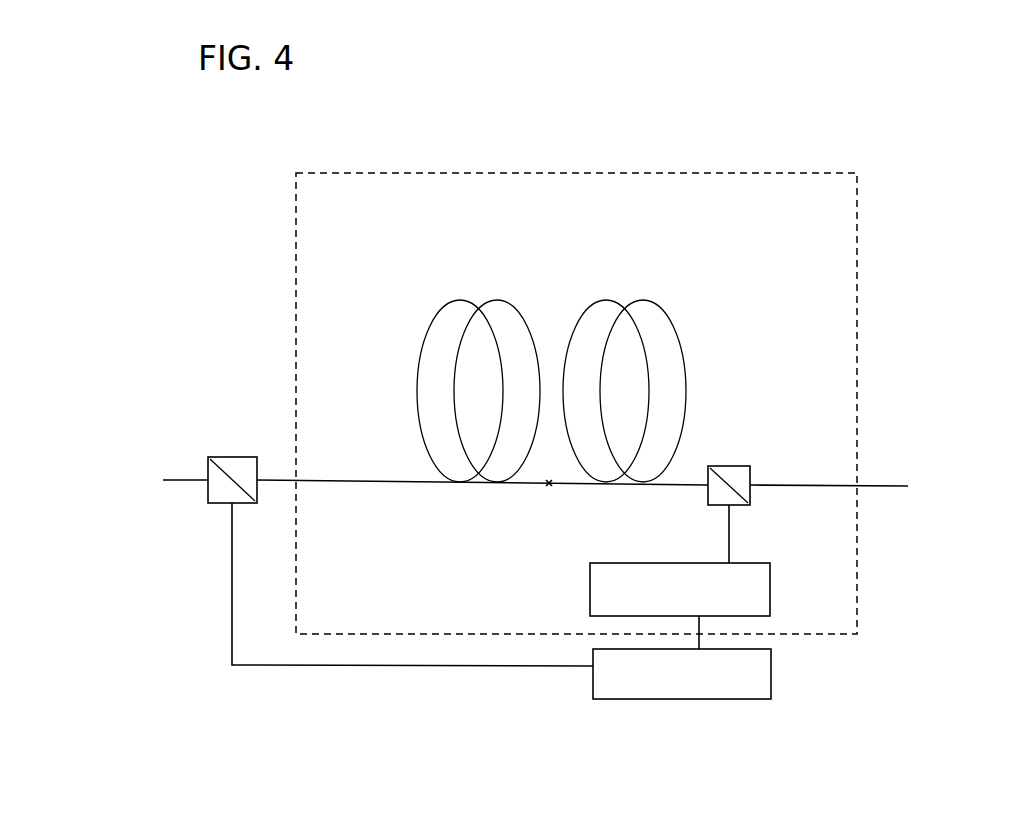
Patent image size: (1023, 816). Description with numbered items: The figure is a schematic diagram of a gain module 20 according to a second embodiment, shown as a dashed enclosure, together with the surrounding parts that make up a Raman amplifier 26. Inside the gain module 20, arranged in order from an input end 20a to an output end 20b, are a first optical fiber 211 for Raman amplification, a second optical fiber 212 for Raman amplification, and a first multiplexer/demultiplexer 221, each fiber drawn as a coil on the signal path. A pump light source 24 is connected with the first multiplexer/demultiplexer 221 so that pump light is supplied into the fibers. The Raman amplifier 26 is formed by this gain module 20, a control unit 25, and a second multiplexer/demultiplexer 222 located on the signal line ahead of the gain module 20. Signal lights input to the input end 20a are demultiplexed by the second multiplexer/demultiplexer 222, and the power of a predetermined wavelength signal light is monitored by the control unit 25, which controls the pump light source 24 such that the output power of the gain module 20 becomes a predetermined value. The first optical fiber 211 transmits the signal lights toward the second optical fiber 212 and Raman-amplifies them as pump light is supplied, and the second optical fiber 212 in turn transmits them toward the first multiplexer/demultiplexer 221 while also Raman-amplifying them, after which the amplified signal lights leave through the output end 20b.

The gain module 20 is at (860, 207).
The input end 20a is at (412, 487).
The output end 20b is at (768, 488).
The first optical fiber for Raman amplification 211 is at (462, 300).
The second optical fiber for Raman amplification 212 is at (600, 300).
The first multiplexer/demultiplexer 221 is at (728, 466).
The second multiplexer/demultiplexer 222 is at (228, 457).
The pump light source 24 is at (770, 588).
The control unit 25 is at (771, 665).
The Raman amplifier 26 is at (888, 300).